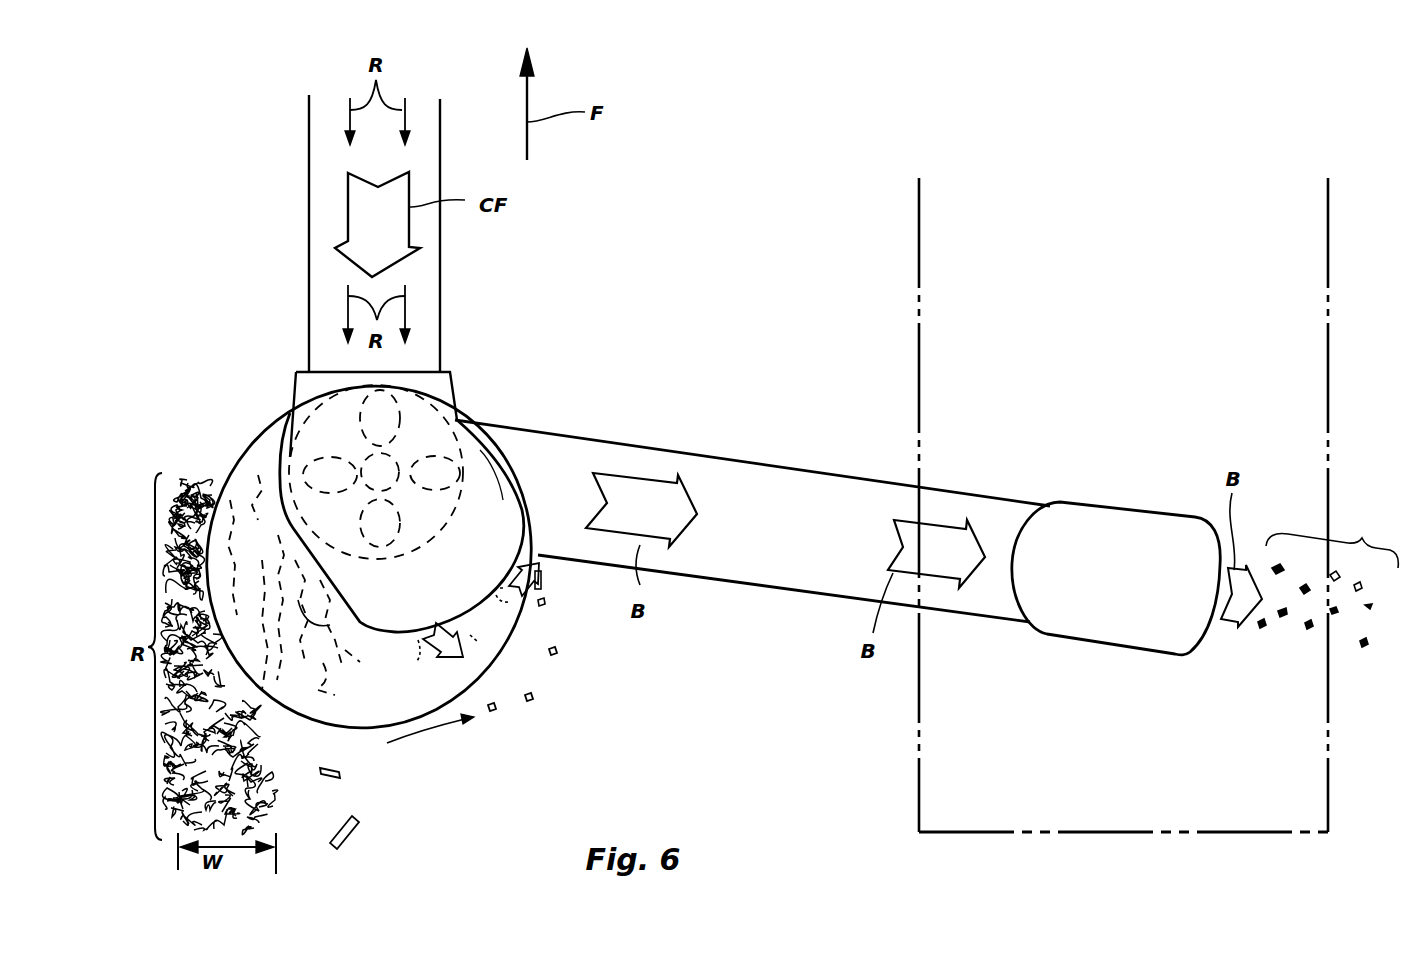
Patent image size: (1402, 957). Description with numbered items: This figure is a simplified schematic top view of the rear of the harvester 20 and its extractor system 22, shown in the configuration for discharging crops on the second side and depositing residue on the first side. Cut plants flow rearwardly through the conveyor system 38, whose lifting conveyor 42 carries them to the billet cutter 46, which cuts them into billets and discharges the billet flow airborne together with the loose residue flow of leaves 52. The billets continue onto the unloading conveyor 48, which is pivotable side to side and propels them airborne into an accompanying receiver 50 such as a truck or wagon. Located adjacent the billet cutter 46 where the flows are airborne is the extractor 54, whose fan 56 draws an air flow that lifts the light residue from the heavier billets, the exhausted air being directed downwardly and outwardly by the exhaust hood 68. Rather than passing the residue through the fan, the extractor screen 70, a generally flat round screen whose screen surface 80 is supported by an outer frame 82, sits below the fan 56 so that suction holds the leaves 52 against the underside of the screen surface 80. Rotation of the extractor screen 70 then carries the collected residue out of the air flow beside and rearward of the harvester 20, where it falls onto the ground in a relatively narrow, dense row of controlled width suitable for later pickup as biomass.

The harvester 20 is at (685, 140).
The extractor system 22 is at (255, 440).
The conveyor system 38 is at (440, 280).
The lifting conveyor 42 is at (1328, 579).
The billet cutter 46 is at (450, 374).
The unloading conveyor 48 is at (768, 465).
The receiver 50 is at (919, 788).
The leaves 52 is at (267, 645).
The extractor 54 is at (307, 397).
The fan 56 is at (423, 457).
The exhaust hood 68 is at (503, 460).
The extractor screen 70 is at (282, 672).
The screen surface 80 is at (500, 618).
The outer frame 82 is at (318, 712).